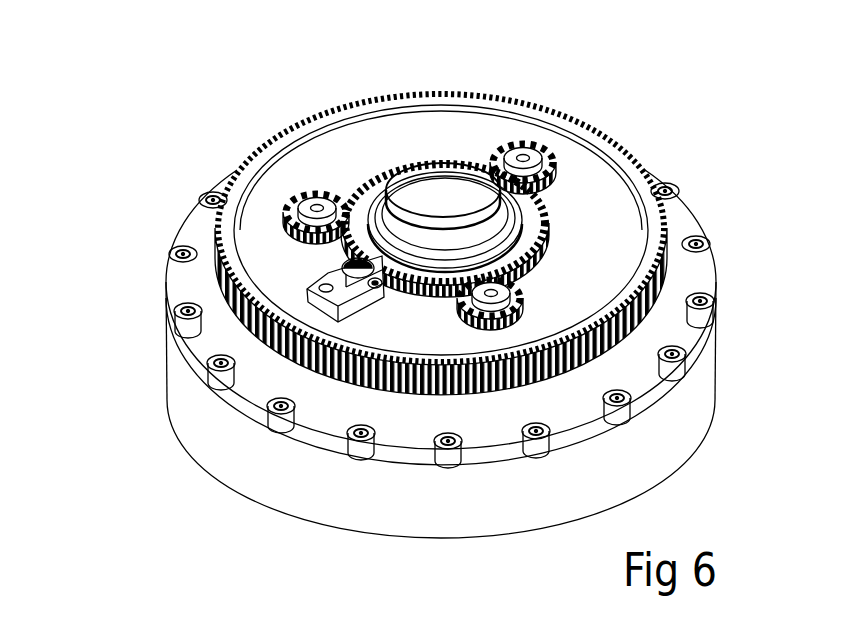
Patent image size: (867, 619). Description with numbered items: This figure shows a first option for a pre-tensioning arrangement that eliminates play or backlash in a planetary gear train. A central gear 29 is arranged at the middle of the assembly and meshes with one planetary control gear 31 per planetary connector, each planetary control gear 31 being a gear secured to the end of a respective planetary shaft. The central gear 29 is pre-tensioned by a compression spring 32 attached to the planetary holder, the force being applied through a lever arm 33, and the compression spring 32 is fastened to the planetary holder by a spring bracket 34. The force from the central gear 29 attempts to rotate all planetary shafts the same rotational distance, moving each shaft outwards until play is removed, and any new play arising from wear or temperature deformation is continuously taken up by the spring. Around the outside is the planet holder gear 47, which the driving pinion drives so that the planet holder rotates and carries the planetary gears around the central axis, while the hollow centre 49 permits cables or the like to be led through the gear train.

The central gear 29 is at (543, 227).
The planetary control gear 31 is at (307, 208).
The compression spring 32 is at (345, 263).
The lever arm 33 is at (364, 252).
The spring bracket 34 is at (353, 300).
The planet holder gear 47 is at (650, 160).
The hollow centre 49 is at (433, 208).